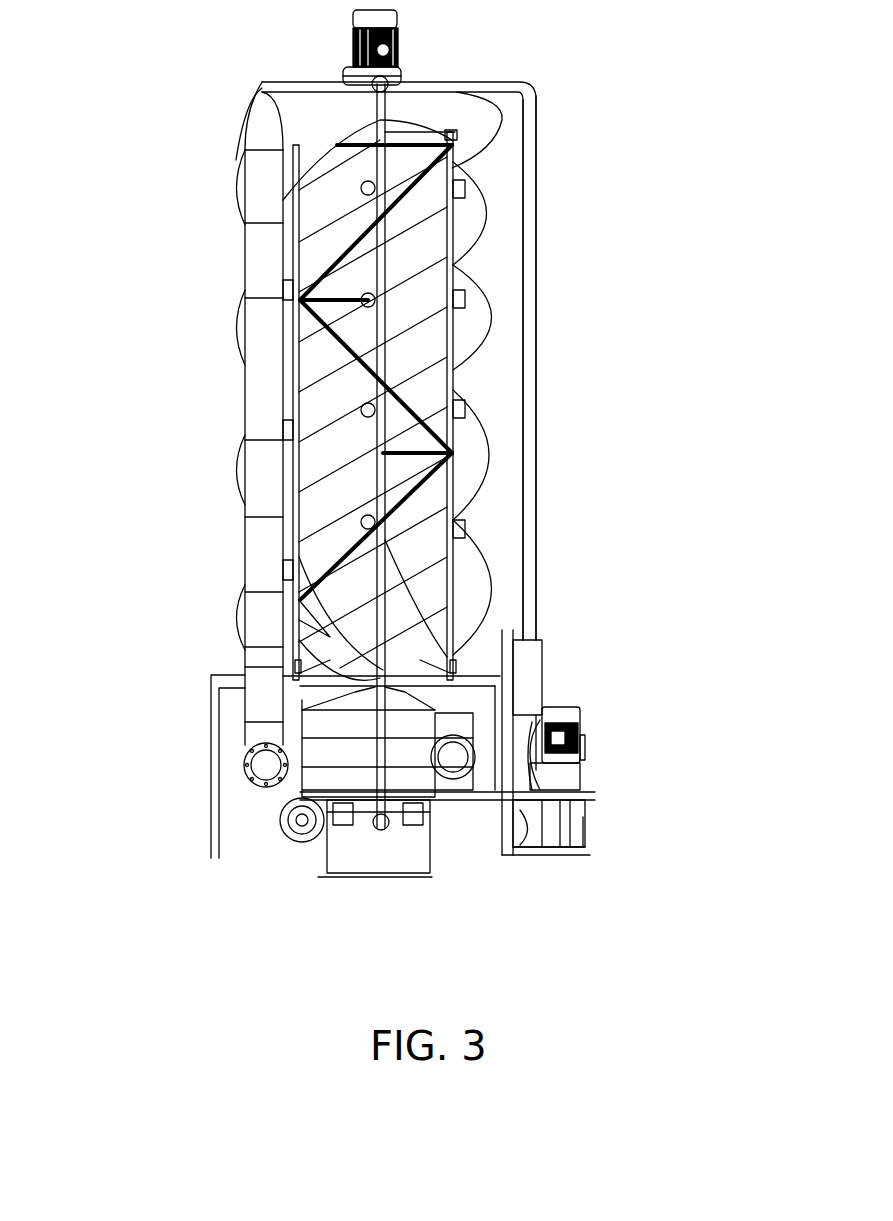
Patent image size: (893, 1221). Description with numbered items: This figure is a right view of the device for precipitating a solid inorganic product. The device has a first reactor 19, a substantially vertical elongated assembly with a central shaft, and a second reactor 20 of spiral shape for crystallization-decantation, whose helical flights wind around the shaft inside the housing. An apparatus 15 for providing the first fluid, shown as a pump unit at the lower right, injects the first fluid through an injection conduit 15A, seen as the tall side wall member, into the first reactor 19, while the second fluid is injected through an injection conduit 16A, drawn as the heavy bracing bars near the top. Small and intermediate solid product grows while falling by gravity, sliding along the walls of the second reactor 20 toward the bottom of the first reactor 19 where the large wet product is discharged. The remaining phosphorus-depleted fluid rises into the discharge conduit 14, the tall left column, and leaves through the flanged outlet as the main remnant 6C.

The discharge conduit 14 is at (243, 322).
The second reactor 20 is at (318, 373).
The first reactor 19 is at (395, 369).
The injection conduit 16A is at (452, 158).
The injection conduit 15A is at (536, 515).
The apparatus for providing the first fluid 15 is at (585, 733).
The main remnant 6C is at (266, 763).